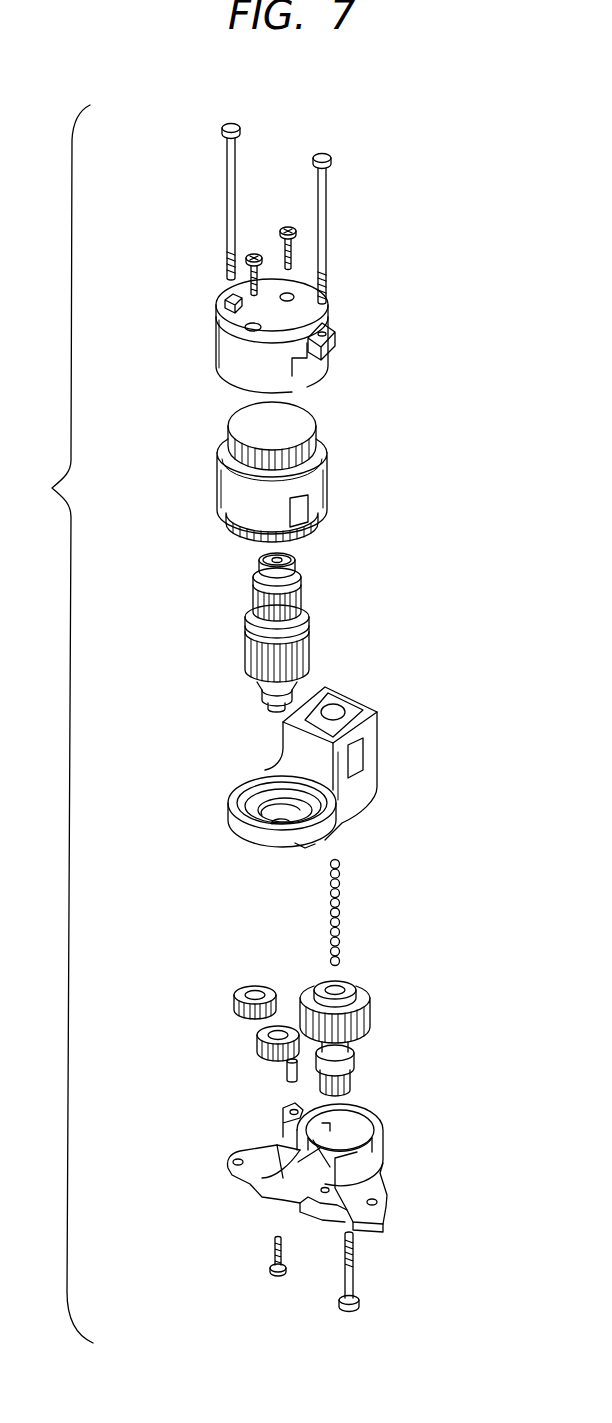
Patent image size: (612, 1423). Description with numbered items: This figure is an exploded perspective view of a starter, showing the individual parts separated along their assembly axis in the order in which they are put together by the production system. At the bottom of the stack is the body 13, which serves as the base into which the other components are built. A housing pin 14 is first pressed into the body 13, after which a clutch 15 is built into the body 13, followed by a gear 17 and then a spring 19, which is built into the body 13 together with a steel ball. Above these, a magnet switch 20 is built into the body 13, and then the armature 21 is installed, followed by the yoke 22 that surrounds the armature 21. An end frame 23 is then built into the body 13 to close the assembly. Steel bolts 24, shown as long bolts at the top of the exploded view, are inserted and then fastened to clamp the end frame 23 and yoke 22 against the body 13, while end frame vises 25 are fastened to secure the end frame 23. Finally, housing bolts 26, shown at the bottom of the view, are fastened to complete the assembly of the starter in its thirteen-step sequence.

The body 13 is at (385, 1160).
The housing pin 14 is at (283, 1070).
The clutch 15 is at (370, 1007).
The gear 17 is at (232, 1003).
The spring 19 is at (340, 910).
The magnet switch 20 is at (380, 752).
The armature 21 is at (311, 637).
The yoke 22 is at (327, 492).
The end frame 23 is at (330, 318).
The steel bolts 24 is at (325, 233).
The end frame vises 25 is at (287, 228).
The housing bolts 26 is at (356, 1283).